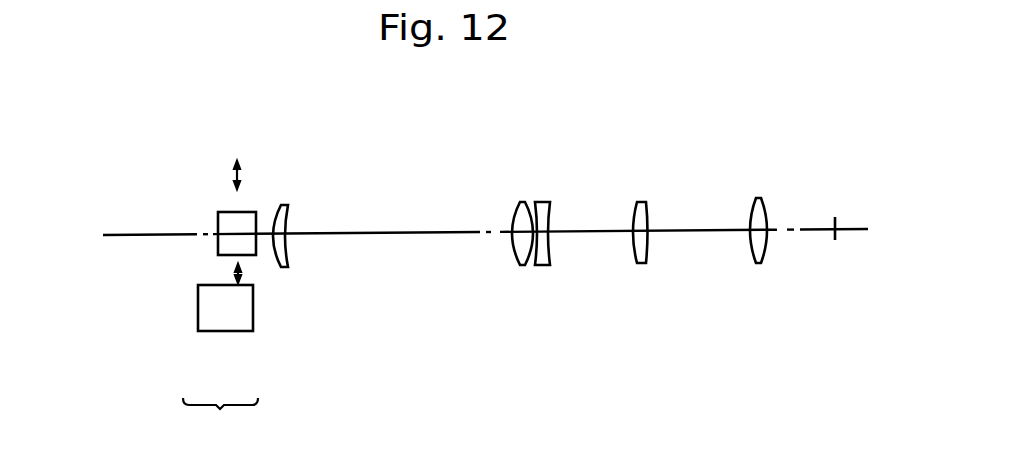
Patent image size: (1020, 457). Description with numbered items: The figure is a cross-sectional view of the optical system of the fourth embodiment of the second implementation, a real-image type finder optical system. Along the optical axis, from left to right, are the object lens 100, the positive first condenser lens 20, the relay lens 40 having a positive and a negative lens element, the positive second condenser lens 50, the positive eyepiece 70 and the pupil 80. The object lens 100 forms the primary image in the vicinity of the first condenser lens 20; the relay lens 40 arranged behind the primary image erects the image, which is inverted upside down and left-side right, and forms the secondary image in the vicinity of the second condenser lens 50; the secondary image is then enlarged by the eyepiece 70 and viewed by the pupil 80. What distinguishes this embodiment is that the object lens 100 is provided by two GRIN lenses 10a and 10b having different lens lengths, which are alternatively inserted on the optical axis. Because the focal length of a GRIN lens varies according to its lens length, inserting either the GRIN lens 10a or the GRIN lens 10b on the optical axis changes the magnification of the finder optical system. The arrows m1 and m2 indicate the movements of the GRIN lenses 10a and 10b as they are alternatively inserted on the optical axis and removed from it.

The GRIN lens 10a is at (218, 228).
The GRIN lens 10b is at (213, 331).
The object lens 100 is at (220, 424).
The arrow m1 is at (242, 173).
The arrow m2 is at (243, 273).
The first condenser lens 20 is at (288, 217).
The relay lens 40 is at (560, 176).
The second condenser lens 50 is at (637, 203).
The eyepiece 70 is at (752, 205).
The pupil 80 is at (835, 215).